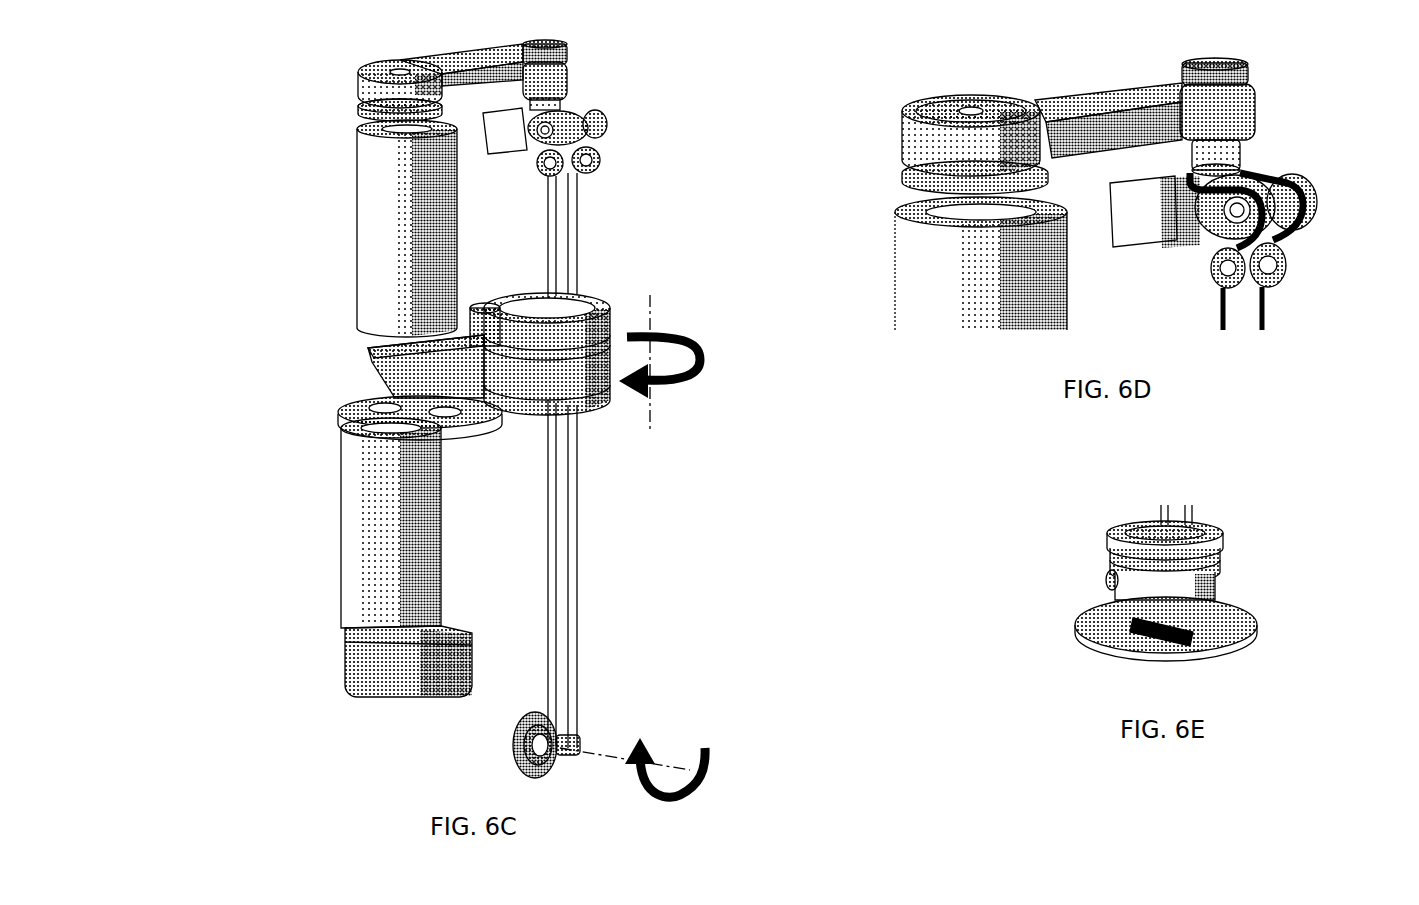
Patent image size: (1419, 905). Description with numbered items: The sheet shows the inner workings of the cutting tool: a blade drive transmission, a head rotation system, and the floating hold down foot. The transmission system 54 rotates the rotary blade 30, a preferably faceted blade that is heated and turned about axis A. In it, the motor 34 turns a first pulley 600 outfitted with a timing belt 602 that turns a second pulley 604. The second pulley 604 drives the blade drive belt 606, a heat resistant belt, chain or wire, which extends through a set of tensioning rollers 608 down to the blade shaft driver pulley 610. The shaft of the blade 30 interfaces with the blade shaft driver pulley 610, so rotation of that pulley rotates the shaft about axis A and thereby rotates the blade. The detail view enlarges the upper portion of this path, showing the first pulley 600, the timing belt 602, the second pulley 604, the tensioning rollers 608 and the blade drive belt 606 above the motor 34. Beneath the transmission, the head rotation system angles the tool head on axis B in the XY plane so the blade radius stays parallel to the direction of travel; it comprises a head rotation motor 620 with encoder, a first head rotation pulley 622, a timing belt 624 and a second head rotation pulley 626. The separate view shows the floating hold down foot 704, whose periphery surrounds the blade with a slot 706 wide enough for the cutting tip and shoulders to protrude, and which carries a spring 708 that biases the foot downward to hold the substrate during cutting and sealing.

In FIG. 6C, the rotary blade 30 is at (512, 745).
In FIG. 6C, the motor 34 is at (385, 203).
In FIG. 6D, the motor 34 is at (960, 297).
In FIG. 6C, the transmission system 54 is at (243, 248).
In FIG. 6C, the first pulley 600 is at (362, 109).
In FIG. 6D, the first pulley 600 is at (905, 180).
In FIG. 6C, the timing belt 602 is at (365, 90).
In FIG. 6D, the timing belt 602 is at (915, 143).
In FIG. 6C, the second pulley 604 is at (560, 52).
In FIG. 6D, the second pulley 604 is at (1245, 85).
In FIG. 6C, the blade drive belt 606 is at (580, 546).
In FIG. 6D, the blade drive belt 606 is at (1268, 312).
In FIG. 6D, the tensioning rollers 608 is at (1308, 245).
In FIG. 6C, the blade shaft driver pulley 610 is at (572, 748).
In FIG. 6C, the head rotation motor 620 is at (370, 532).
In FIG. 6C, the first head rotation pulley 622 is at (370, 402).
In FIG. 6C, the timing belt 624 is at (387, 377).
In FIG. 6C, the second head rotation pulley 626 is at (603, 312).
In FIG. 6E, the floating hold down foot 704 is at (1215, 580).
In FIG. 6E, the slot 706 is at (1125, 632).
In FIG. 6E, the spring 708 is at (1115, 560).